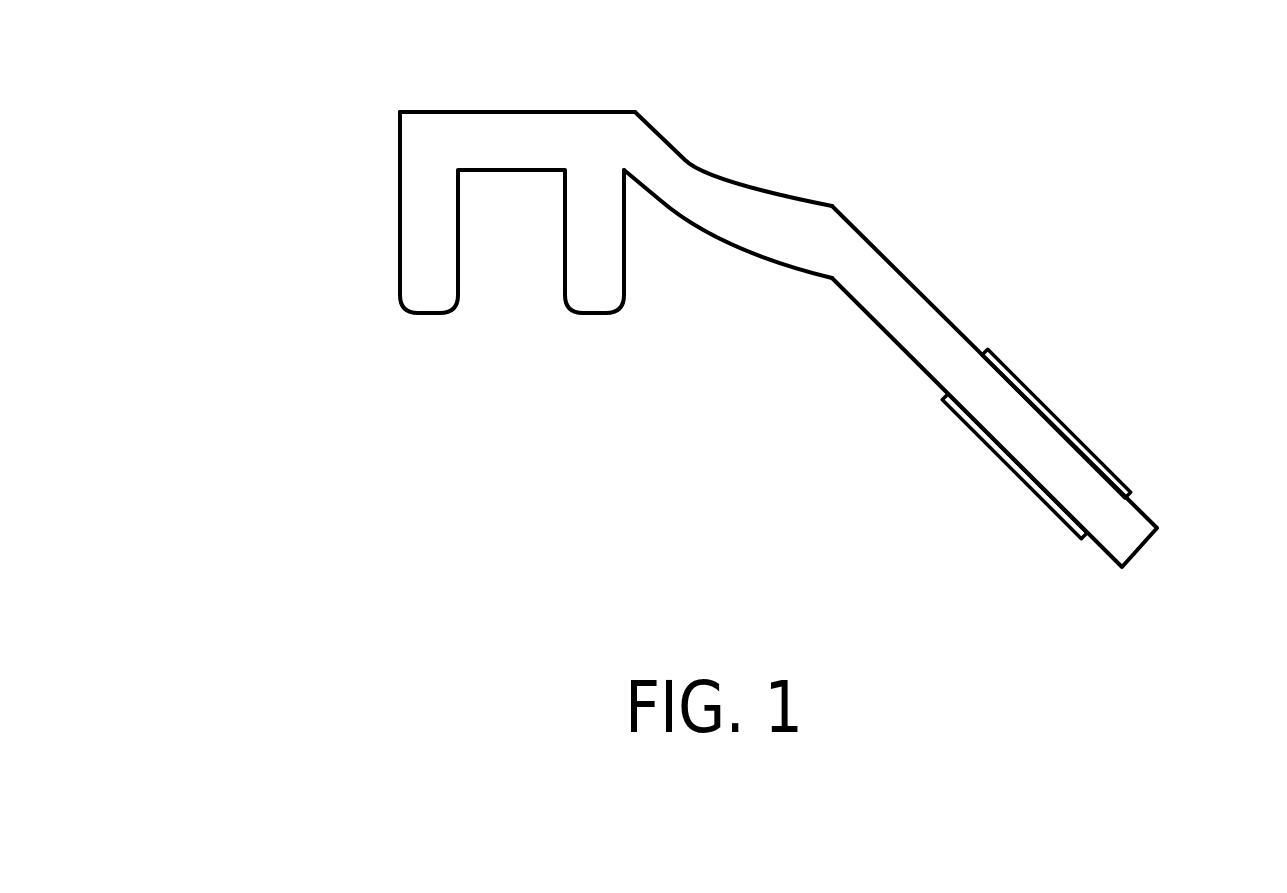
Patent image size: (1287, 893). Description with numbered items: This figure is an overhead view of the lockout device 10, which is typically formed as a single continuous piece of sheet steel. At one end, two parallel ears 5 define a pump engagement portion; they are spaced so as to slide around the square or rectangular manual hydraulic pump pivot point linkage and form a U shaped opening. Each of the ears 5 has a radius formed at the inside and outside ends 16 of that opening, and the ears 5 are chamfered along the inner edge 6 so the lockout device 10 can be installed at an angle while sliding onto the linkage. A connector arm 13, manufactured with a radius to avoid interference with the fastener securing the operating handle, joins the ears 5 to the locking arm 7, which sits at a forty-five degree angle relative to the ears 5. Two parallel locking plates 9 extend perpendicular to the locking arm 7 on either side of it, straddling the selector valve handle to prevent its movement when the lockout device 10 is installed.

The lockout device 10 is at (360, 193).
The parallel ears 5 is at (387, 247).
The inside and outside ends 16 is at (385, 318).
The inner edge 6 is at (558, 247).
The connector arm 13 is at (717, 170).
The locking arm 7 is at (948, 313).
The locking plates 9 is at (1120, 472).